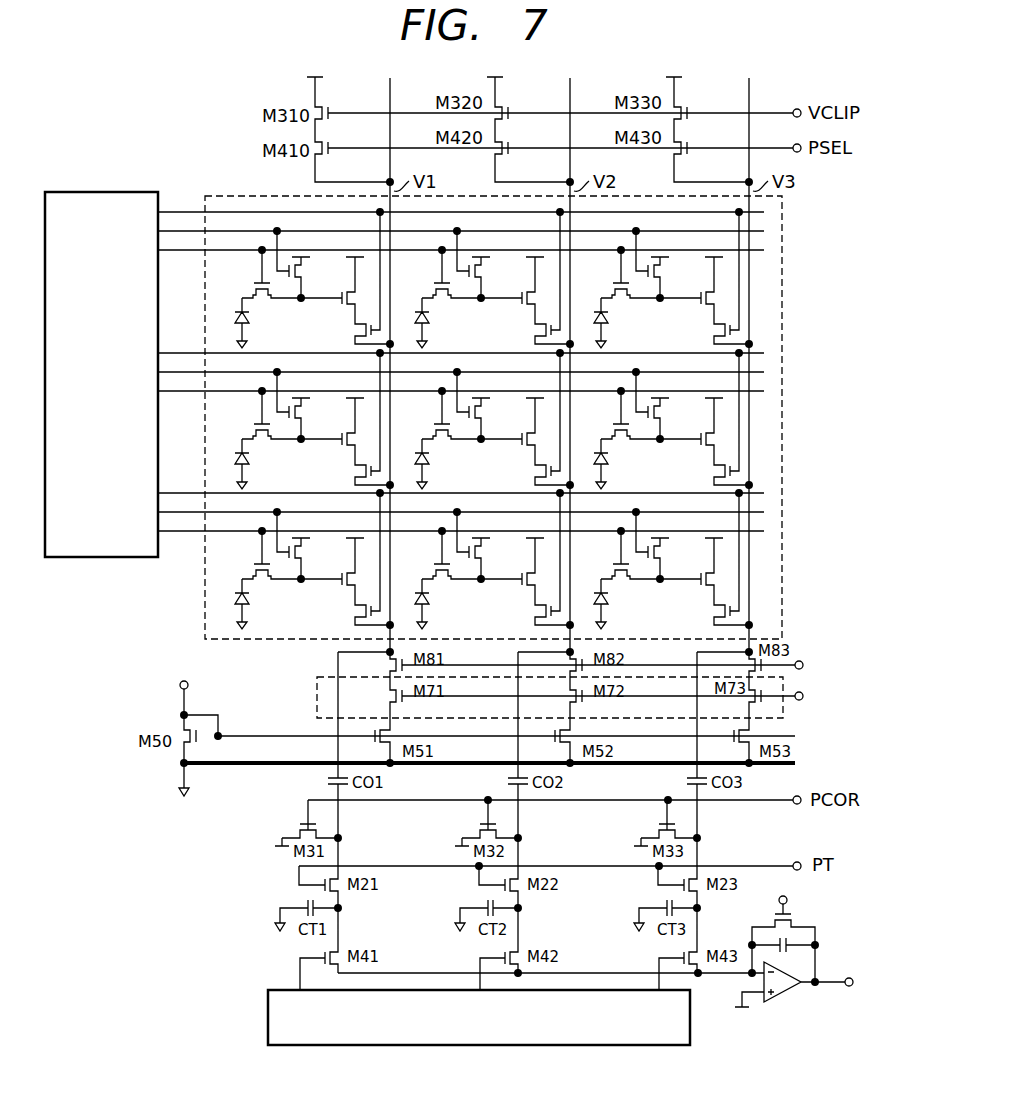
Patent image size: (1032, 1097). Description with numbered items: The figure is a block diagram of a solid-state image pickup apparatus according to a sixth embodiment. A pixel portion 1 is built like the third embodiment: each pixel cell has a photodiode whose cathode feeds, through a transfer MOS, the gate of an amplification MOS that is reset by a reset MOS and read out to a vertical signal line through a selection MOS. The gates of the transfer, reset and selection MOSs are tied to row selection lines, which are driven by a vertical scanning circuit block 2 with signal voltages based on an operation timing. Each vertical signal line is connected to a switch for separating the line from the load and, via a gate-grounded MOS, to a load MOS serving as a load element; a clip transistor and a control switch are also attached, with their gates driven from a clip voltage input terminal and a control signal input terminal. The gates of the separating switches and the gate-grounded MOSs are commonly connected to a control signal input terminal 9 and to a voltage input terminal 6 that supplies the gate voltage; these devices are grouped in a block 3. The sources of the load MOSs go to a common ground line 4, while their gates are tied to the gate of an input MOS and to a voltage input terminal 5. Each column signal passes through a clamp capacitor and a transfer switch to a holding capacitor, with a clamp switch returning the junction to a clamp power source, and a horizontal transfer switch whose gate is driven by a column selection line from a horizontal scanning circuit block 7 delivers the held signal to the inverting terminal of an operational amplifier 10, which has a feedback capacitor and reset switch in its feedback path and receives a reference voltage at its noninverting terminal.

The pixel portion 1 is at (251, 196).
The vertical scanning circuit block 2 is at (127, 192).
The clamp circuit block 3 is at (316, 694).
The common GND line 4 is at (180, 779).
The voltage input terminal 5 is at (191, 683).
The voltage input terminal 6 is at (805, 694).
The horizontal scanning circuit block 7 is at (267, 1005).
The control signal input terminal 9 is at (805, 663).
The operational amplifier 10 is at (782, 996).